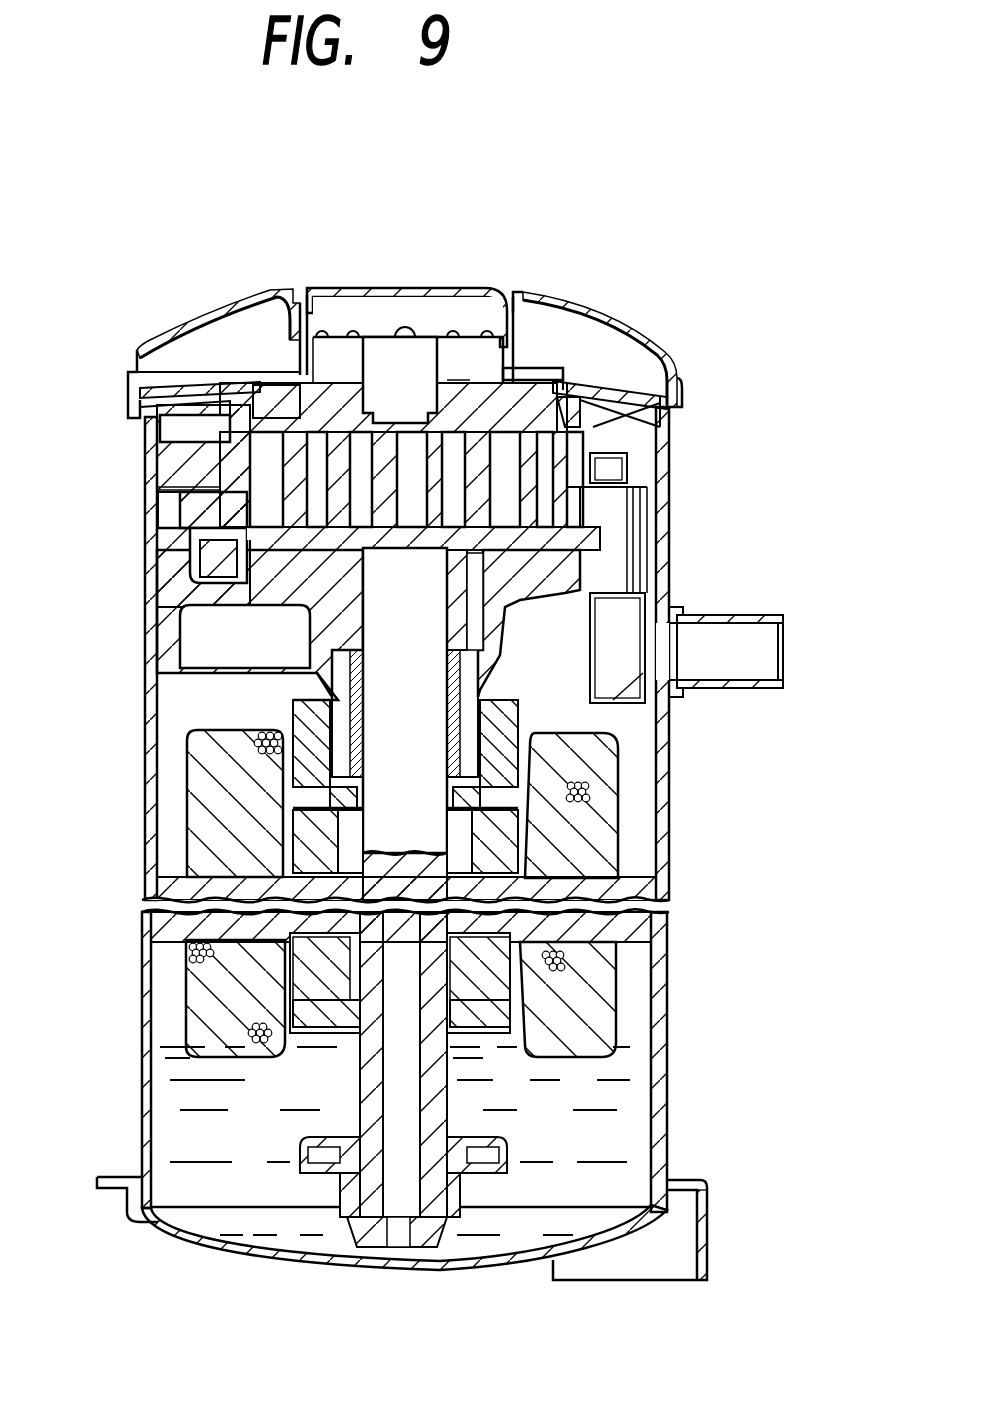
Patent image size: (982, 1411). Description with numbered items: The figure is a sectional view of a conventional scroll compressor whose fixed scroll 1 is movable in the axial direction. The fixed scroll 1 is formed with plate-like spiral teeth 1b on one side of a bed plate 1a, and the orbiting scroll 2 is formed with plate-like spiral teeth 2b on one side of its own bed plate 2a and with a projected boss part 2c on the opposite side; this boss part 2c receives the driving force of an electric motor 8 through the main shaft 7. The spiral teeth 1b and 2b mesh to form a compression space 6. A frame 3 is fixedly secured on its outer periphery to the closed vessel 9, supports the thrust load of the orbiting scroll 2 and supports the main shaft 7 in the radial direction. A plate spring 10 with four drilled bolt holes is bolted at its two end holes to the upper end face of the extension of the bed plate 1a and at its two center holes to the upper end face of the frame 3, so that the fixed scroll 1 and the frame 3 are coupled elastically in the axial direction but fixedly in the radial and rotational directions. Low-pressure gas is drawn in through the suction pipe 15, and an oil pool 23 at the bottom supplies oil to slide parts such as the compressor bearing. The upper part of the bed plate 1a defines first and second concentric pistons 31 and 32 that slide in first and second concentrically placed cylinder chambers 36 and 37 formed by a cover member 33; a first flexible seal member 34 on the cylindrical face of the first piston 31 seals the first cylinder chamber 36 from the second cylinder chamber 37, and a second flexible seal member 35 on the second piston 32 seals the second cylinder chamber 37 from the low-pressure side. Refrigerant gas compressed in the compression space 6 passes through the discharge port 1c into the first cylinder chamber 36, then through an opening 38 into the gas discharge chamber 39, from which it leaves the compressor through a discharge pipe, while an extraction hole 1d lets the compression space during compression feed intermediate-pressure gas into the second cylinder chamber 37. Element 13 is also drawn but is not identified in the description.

The fixed scroll 1 is at (188, 362).
The bed plate 1a is at (193, 517).
The plate-like spiral teeth 1b is at (288, 472).
The discharge port 1c is at (458, 380).
The extraction hole 1d is at (335, 430).
The orbiting scroll 2 is at (587, 525).
The bed plate 2a is at (587, 543).
The plate-like spiral teeth 2b is at (533, 498).
The projected boss part 2c is at (457, 590).
The frame 3 is at (523, 605).
The compression space 6 is at (410, 427).
The main shaft 7 is at (380, 718).
The electric motor 8 is at (590, 823).
The closed vessel 9 is at (663, 863).
The plate spring 10 is at (177, 495).
The oil separator 13 is at (197, 563).
The suction pipe 15 is at (773, 667).
The oil pool 23 is at (218, 1225).
The first piston 31 is at (523, 325).
The second piston 32 is at (222, 397).
The cover member 33 is at (145, 370).
The first flexible seal member 34 is at (515, 360).
The second flexible seal member 35 is at (575, 385).
The first cylinder chamber 36 is at (302, 360).
The second cylinder chamber 37 is at (265, 415).
The opening 38 is at (405, 327).
The gas discharge chamber 39 is at (165, 405).